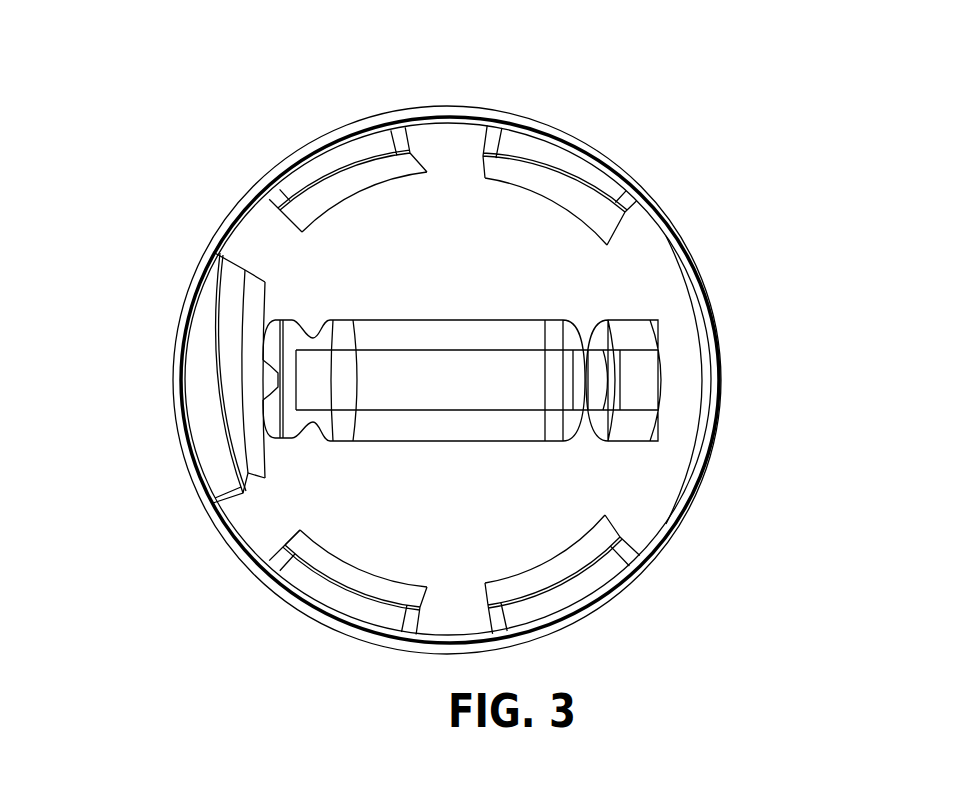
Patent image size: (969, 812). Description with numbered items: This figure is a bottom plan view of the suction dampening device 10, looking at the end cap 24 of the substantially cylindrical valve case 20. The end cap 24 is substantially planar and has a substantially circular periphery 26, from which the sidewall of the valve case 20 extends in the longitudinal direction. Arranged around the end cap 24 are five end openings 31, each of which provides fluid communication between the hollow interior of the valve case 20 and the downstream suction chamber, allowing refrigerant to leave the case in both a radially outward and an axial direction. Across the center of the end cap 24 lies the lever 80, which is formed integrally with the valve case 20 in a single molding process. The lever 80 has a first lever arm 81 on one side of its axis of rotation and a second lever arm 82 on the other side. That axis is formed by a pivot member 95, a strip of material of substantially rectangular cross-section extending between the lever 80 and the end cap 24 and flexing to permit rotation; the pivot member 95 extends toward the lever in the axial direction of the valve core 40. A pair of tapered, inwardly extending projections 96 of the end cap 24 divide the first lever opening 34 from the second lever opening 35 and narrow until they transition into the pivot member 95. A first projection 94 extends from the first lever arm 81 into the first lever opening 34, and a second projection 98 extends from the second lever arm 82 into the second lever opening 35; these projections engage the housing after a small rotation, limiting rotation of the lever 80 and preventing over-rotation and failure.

The suction dampening device 10 is at (200, 227).
The valve case 20 is at (730, 381).
The end cap 24 is at (460, 269).
The periphery 26 is at (708, 308).
The end openings 31 is at (343, 163).
The first lever opening 34 is at (310, 440).
The second lever opening 35 is at (633, 443).
The valve core 40 is at (398, 588).
The lever 80 is at (464, 356).
The first lever arm 81 is at (392, 370).
The second lever arm 82 is at (632, 348).
The first projection 94 is at (307, 385).
The pivot member 95 is at (582, 380).
The projections 96 is at (585, 331).
The second projection 98 is at (638, 385).